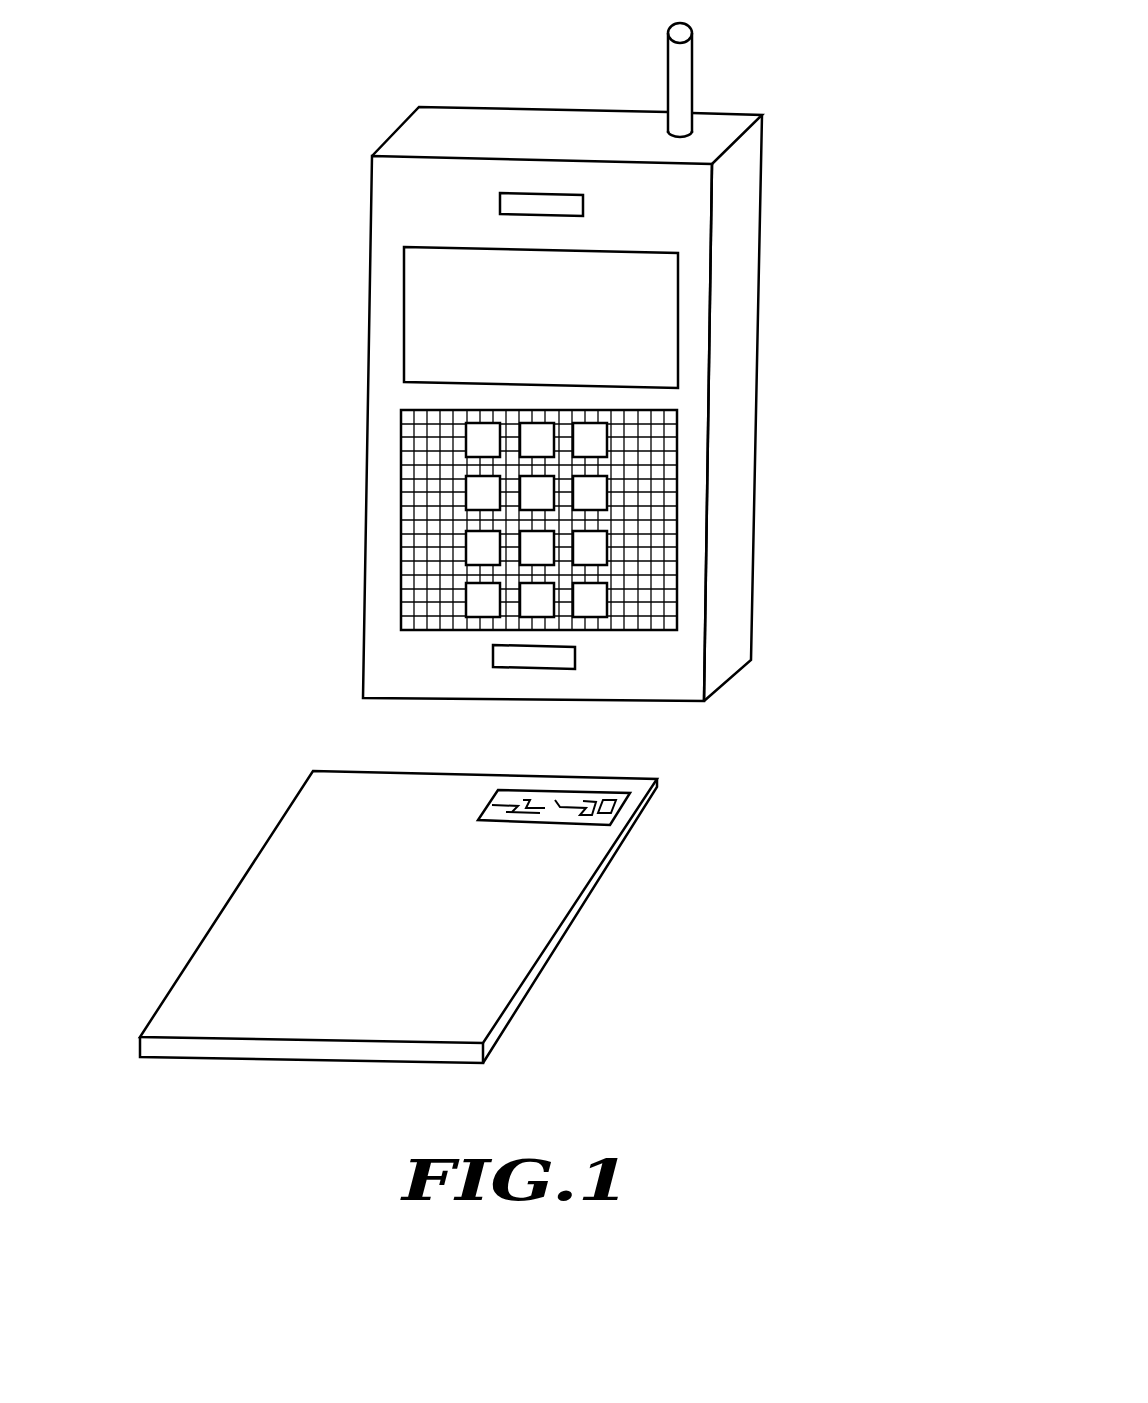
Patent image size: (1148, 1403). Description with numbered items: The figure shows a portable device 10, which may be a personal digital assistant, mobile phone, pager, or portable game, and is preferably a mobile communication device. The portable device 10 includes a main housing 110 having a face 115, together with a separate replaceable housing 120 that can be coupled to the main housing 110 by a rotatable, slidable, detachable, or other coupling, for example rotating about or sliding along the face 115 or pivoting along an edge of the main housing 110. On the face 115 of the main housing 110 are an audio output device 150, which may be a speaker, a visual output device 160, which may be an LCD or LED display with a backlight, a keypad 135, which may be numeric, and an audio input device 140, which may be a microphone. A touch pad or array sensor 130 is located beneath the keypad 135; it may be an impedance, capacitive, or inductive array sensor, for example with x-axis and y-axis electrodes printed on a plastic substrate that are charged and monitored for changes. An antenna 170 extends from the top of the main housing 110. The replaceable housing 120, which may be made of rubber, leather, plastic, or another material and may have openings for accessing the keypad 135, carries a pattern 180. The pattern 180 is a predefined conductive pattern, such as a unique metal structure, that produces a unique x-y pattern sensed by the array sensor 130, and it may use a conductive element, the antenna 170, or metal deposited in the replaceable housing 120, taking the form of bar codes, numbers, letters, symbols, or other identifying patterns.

The portable device 10 is at (886, 95).
The main housing 110 is at (734, 471).
The face 115 is at (690, 590).
The replaceable housing 120 is at (227, 905).
The array sensor 130 is at (402, 443).
The keypad 135 is at (480, 550).
The audio input device 140 is at (575, 657).
The audio output device 150 is at (583, 205).
The visual output device 160 is at (404, 313).
The antenna 170 is at (693, 59).
The pattern 180 is at (563, 788).